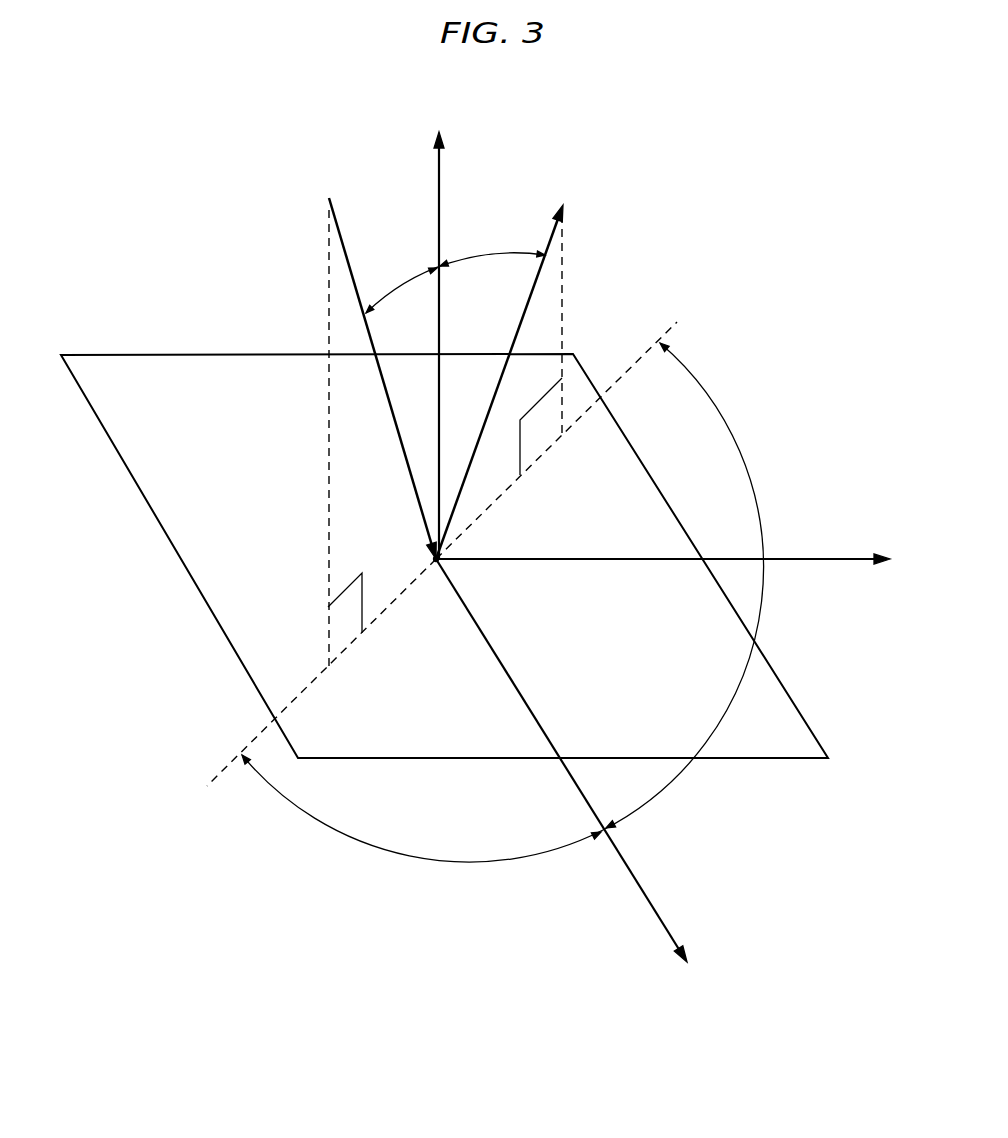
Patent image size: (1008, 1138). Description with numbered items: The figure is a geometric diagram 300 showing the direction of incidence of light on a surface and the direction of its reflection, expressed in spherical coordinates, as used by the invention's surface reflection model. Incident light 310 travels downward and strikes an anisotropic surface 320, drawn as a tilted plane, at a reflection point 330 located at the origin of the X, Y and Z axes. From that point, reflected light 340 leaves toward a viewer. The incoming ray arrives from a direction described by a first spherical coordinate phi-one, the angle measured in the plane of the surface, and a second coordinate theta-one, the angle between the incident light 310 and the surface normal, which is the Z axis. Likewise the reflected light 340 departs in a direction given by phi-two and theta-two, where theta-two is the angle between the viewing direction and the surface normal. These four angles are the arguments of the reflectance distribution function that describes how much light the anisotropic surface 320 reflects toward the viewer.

The reflection geometry diagram 300 is at (757, 92).
The incident light 310 is at (329, 198).
The anisotropic surface 320 is at (797, 753).
The reflection point 330 is at (436, 563).
The reflected light 340 is at (563, 205).